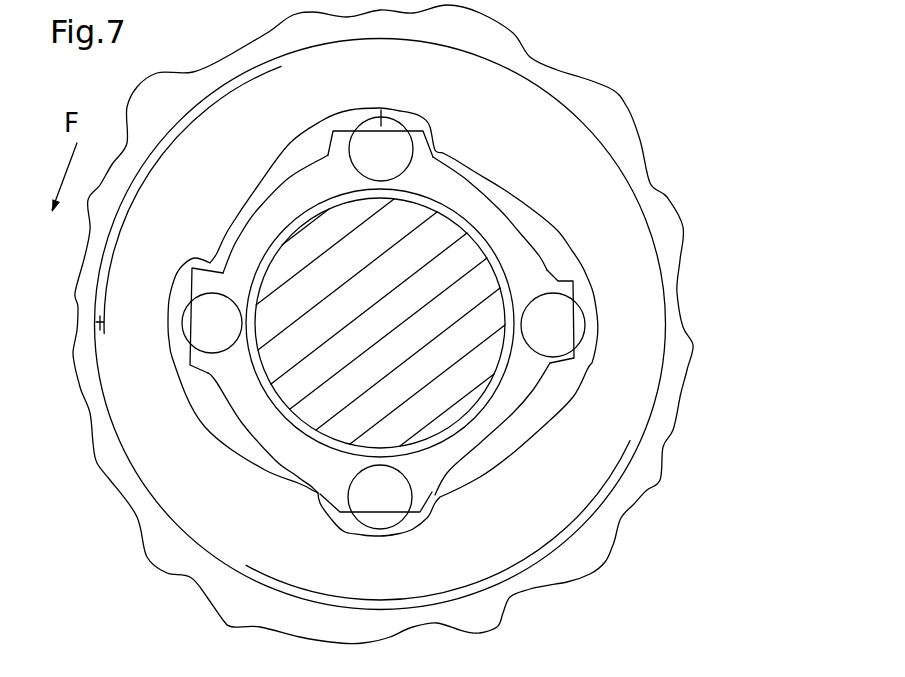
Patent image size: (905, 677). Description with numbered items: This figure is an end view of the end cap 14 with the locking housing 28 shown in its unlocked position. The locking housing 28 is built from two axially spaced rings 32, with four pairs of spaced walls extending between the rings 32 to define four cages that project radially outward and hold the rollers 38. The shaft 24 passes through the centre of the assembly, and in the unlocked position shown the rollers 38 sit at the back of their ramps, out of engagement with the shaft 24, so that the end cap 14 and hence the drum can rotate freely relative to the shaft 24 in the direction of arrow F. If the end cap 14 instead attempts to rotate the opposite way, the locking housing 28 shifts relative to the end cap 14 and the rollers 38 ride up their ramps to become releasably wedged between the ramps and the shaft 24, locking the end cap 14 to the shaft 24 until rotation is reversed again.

The end cap 14 is at (665, 345).
The shaft 24 is at (433, 410).
The locking housing 28 is at (525, 245).
The rings 32 is at (523, 267).
The rollers 38 is at (593, 340).